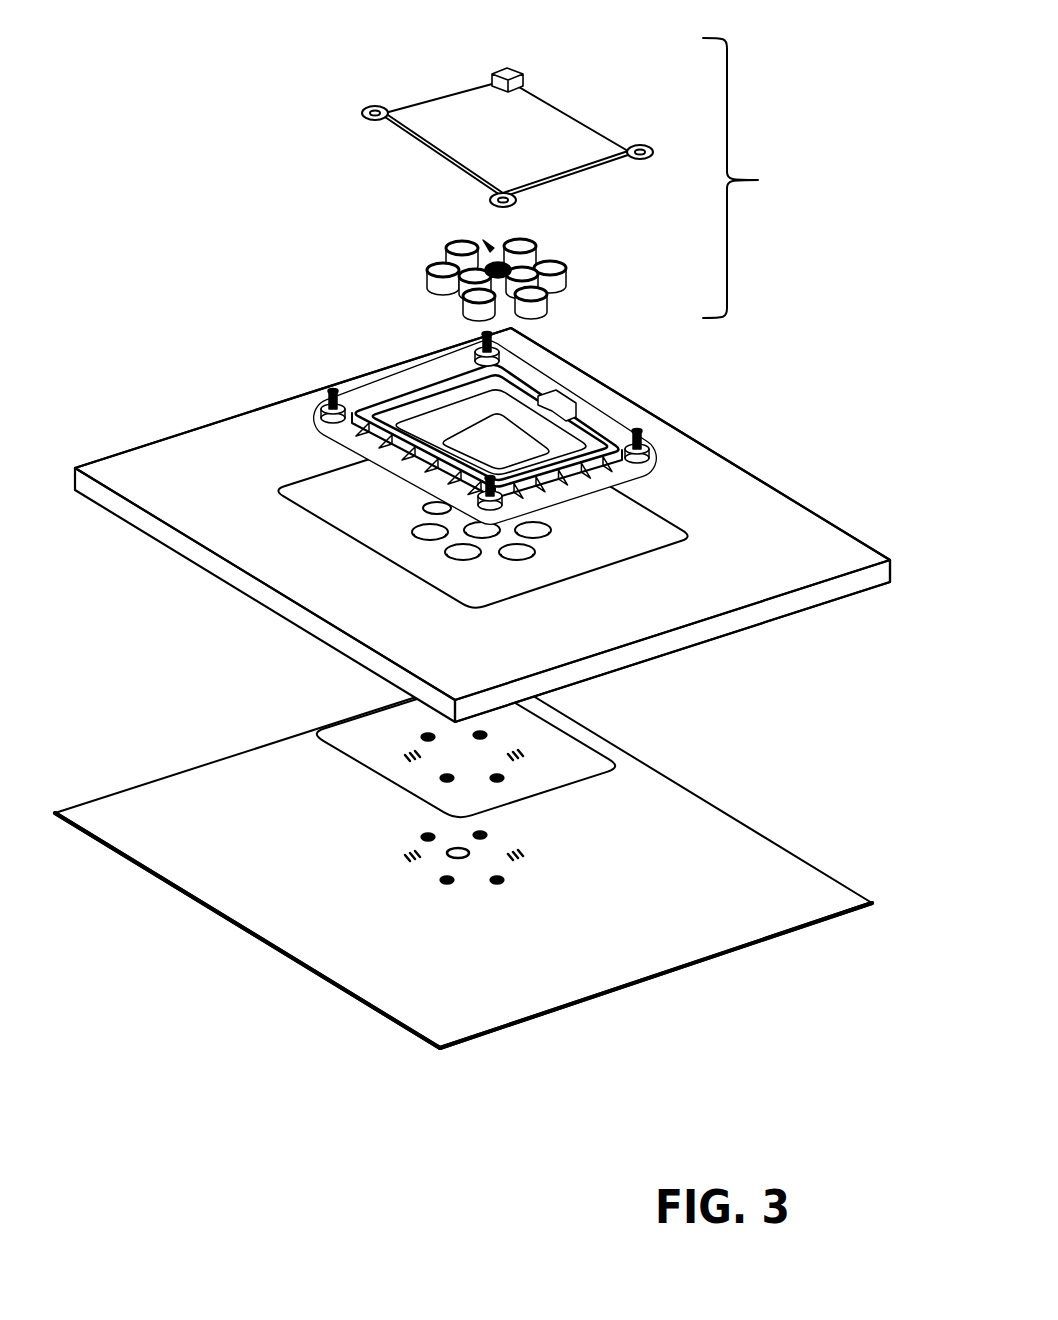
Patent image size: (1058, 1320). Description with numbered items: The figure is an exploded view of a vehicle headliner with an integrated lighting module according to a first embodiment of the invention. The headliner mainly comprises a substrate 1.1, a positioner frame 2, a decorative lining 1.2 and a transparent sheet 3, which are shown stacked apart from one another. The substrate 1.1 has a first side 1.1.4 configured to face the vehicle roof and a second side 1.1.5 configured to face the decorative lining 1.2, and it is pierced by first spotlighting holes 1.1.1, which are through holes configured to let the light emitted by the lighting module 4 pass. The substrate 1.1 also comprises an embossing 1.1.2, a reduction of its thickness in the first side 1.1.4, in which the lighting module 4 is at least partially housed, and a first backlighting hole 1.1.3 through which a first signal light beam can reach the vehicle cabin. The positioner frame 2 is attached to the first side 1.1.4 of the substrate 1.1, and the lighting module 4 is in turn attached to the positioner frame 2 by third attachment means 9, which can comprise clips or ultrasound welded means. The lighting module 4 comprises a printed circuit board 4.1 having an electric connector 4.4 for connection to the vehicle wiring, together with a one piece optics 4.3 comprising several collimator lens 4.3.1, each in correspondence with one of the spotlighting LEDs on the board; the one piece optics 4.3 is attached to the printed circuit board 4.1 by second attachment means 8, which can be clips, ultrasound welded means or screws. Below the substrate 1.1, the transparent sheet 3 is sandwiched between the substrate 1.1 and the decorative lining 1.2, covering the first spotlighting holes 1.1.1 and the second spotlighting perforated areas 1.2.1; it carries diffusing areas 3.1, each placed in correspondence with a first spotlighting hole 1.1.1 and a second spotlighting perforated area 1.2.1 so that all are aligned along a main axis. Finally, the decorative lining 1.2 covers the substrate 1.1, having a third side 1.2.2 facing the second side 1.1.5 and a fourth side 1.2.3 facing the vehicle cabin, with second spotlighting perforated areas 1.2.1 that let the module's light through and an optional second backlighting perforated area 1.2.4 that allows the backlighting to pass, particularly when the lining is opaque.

The substrate 1.1 is at (830, 555).
The first spotlighting holes 1.1.1 is at (520, 562).
The embossing 1.1.2 is at (585, 568).
The first backlighting hole 1.1.3 is at (440, 513).
The first side 1.1.4 is at (718, 492).
The second side 1.1.5 is at (797, 613).
The decorative lining 1.2 is at (795, 893).
The second spotlighting perforated areas 1.2.1 is at (507, 877).
The third side 1.2.2 is at (622, 965).
The fourth side 1.2.3 is at (560, 1008).
The second backlighting perforated area 1.2.4 is at (448, 855).
The positioner frame 2 is at (347, 433).
The transparent sheet 3 is at (583, 763).
The diffusing areas 3.1 is at (438, 780).
The lighting module 4 is at (747, 178).
The printed circuit board 4.1 is at (565, 150).
The one piece optics 4.3 is at (448, 274).
The collimator lens 4.3.1 is at (475, 305).
The electric connector 4.4 is at (503, 68).
The second attachment means 8 is at (492, 242).
The third attachment means 9 is at (327, 413).